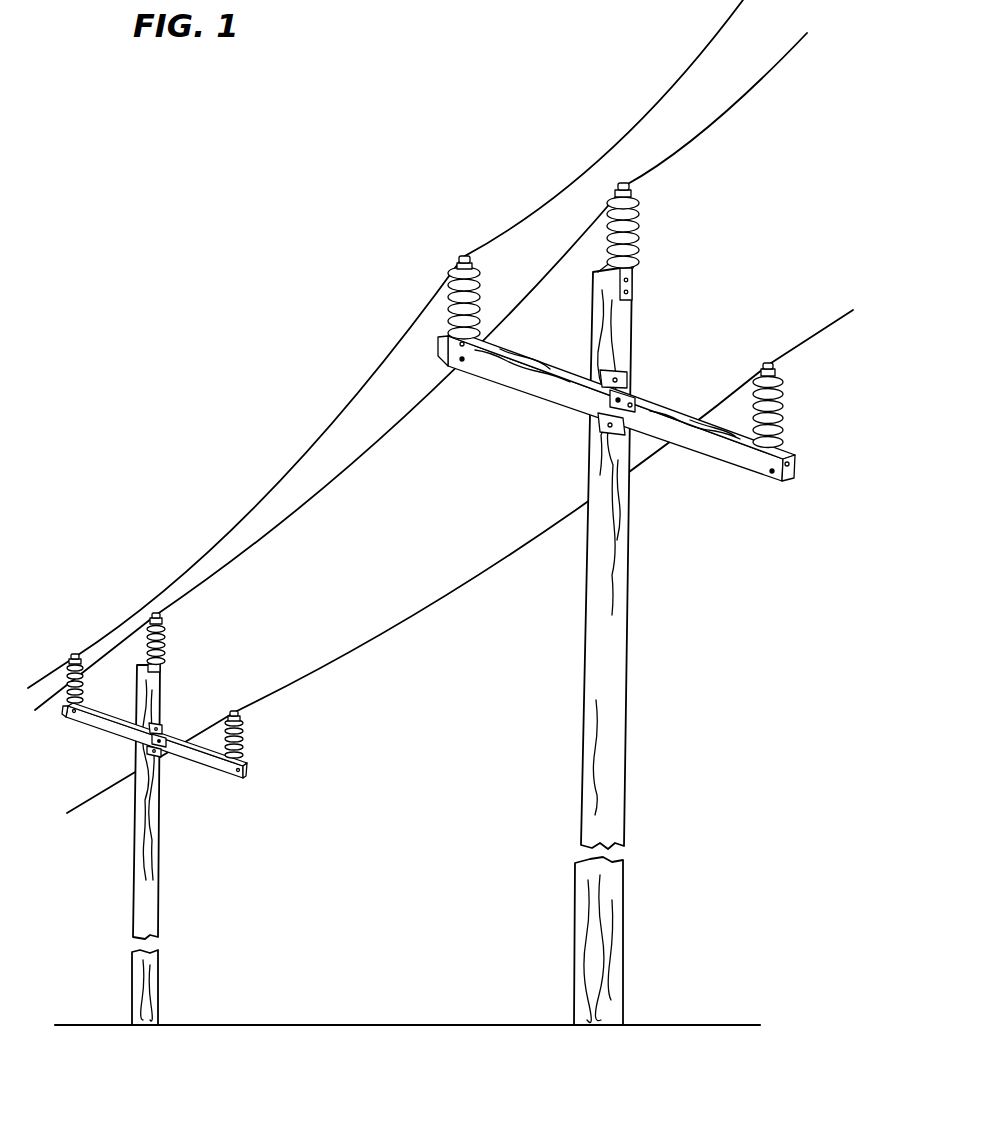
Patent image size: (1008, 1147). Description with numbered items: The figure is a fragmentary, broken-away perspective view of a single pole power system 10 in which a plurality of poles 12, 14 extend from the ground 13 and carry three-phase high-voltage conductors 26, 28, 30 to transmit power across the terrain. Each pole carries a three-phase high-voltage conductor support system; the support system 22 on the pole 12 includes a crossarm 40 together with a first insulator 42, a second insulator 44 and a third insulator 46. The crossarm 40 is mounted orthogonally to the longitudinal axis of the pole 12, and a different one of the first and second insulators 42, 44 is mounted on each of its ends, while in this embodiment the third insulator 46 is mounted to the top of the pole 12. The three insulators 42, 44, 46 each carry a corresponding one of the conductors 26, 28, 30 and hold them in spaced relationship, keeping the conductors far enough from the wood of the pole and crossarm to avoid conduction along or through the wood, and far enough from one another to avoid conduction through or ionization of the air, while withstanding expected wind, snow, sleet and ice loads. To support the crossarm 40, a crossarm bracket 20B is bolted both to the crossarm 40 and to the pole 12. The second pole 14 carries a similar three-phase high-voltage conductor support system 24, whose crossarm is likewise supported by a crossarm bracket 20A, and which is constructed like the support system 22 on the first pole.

The single pole power system 10 is at (457, 170).
The pole 12 is at (580, 790).
The ground 13 is at (348, 1022).
The pole 14 is at (160, 922).
The crossarm bracket 20A is at (222, 681).
The crossarm bracket 20B is at (636, 394).
The three-phase high-voltage conductor support system 22 is at (616, 402).
The three-phase high-voltage conductor support system 24 is at (154, 716).
The high-voltage conductor 26 is at (311, 452).
The high-voltage conductor 28 is at (365, 452).
The high-voltage conductor 30 is at (392, 625).
The crossarm 40 is at (530, 374).
The first insulator 42 is at (483, 296).
The second insulator 44 is at (789, 420).
The third insulator 46 is at (642, 255).